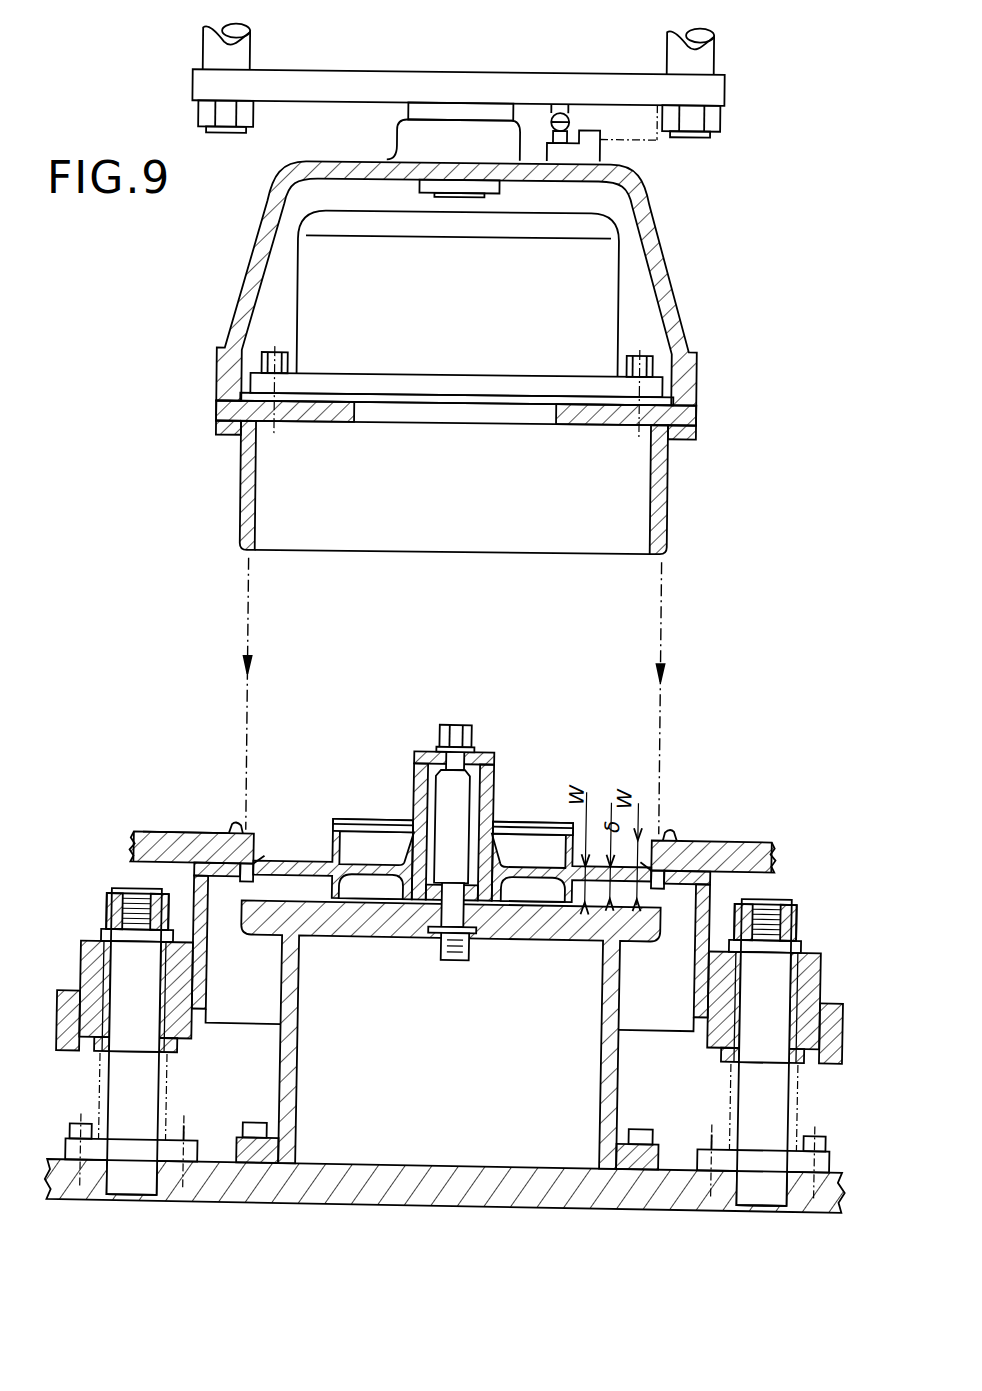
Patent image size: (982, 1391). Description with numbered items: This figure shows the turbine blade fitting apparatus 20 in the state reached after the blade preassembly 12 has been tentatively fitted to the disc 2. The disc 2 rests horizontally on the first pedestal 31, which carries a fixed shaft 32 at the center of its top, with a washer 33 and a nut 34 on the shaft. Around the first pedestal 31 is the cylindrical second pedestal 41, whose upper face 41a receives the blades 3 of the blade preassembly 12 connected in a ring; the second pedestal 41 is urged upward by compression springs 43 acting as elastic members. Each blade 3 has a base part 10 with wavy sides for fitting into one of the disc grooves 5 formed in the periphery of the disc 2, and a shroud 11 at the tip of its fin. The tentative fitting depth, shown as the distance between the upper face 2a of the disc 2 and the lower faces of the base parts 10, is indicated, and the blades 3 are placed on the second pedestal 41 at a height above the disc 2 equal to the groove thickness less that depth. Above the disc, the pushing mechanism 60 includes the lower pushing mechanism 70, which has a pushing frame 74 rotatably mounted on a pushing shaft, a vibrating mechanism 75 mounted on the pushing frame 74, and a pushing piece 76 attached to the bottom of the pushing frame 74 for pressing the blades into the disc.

The disc 2 is at (454, 775).
The upper face of the disc 2a is at (258, 853).
The blades 3 is at (192, 830).
The disc grooves 5 is at (273, 857).
The base part 10 is at (248, 834).
The shroud 11 is at (130, 836).
The blade preassembly 12 is at (157, 832).
The turbine blade fitting apparatus 20 is at (157, 383).
The first pedestal 31 is at (553, 826).
The fixed shaft 32 is at (493, 780).
The washer 33 is at (460, 776).
The nut 34 is at (443, 725).
The second pedestal 41 is at (710, 890).
The upper face of the second pedestal 41a is at (190, 887).
The compression springs 43 is at (797, 1107).
The pushing mechanism 60 is at (753, 81).
The lower pushing mechanism 70 is at (654, 187).
The pushing frame 74 is at (660, 246).
The vibrating mechanism 75 is at (620, 322).
The pushing piece 76 is at (668, 507).